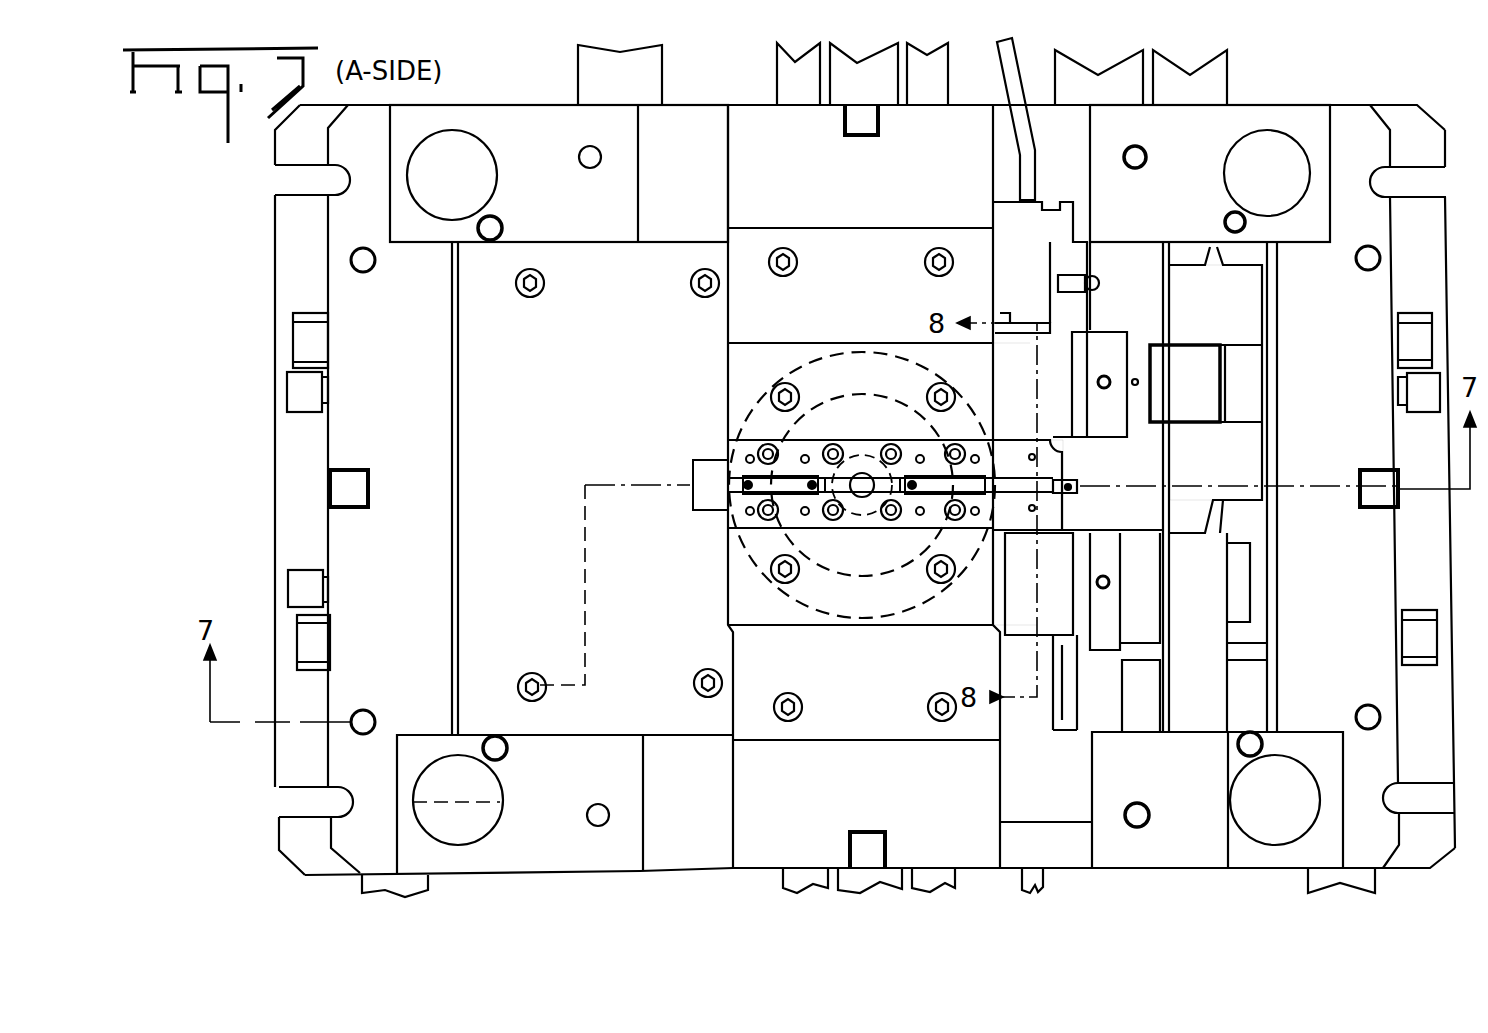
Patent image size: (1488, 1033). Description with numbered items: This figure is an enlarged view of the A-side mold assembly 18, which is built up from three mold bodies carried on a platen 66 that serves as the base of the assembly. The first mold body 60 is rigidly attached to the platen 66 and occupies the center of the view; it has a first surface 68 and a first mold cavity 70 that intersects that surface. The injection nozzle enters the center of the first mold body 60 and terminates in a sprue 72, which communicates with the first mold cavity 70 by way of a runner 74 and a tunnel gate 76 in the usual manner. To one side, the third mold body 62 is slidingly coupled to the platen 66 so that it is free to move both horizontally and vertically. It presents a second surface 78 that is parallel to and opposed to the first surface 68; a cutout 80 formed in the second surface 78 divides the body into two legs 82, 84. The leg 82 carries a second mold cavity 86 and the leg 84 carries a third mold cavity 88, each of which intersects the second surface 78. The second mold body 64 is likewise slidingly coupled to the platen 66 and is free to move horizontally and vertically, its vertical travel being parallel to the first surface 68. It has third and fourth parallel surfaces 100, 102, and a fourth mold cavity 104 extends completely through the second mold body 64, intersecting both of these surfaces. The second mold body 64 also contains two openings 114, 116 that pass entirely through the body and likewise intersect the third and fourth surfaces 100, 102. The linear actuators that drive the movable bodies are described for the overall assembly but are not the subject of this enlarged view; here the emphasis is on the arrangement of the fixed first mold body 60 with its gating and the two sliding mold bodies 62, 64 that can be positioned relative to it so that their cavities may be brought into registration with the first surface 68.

The A-side mold assembly 18 is at (1268, 92).
The first mold body 60 is at (930, 610).
The third mold body 62 is at (1130, 262).
The second mold body 64 is at (1048, 515).
The platen 66 is at (305, 849).
The first surface 68 is at (1025, 445).
The first mold cavity 70 is at (912, 455).
The sprue 72 is at (858, 470).
The runner 74 is at (862, 498).
The tunnel gate 76 is at (910, 508).
The second surface 78 is at (1052, 262).
The cutout 80 is at (1100, 343).
The leg 82 is at (1153, 478).
The leg 84 is at (1075, 320).
The second mold cavity 86 is at (1078, 483).
The third mold cavity 88 is at (1080, 285).
The third surface 100 is at (990, 540).
The fourth surface 102 is at (1068, 512).
The fourth mold cavity 104 is at (1030, 520).
The opening 114 is at (1005, 612).
The opening 116 is at (995, 372).